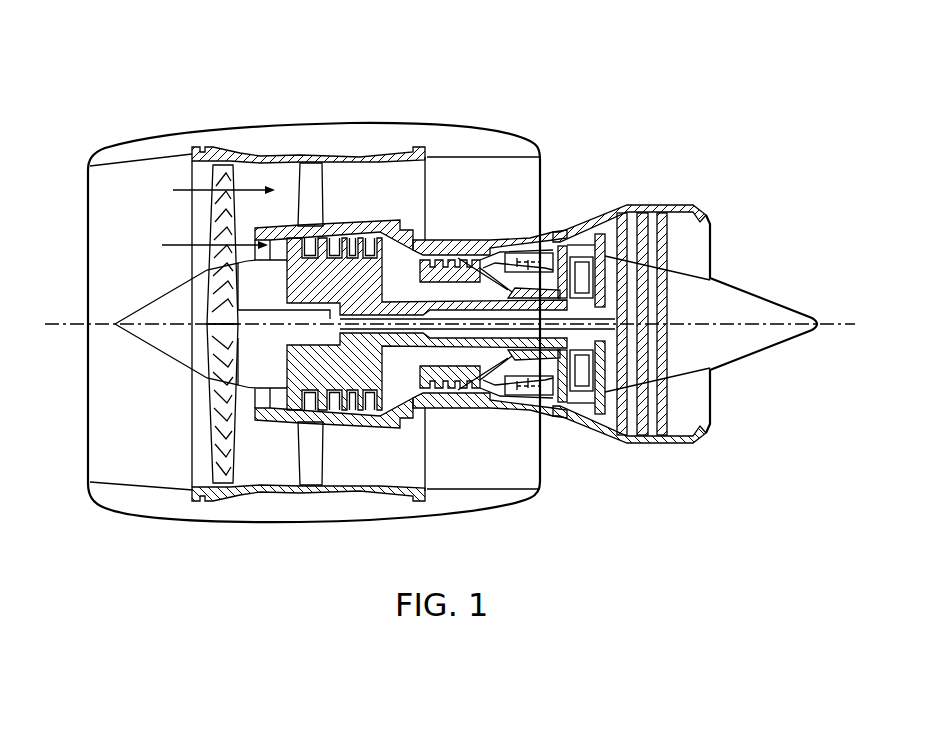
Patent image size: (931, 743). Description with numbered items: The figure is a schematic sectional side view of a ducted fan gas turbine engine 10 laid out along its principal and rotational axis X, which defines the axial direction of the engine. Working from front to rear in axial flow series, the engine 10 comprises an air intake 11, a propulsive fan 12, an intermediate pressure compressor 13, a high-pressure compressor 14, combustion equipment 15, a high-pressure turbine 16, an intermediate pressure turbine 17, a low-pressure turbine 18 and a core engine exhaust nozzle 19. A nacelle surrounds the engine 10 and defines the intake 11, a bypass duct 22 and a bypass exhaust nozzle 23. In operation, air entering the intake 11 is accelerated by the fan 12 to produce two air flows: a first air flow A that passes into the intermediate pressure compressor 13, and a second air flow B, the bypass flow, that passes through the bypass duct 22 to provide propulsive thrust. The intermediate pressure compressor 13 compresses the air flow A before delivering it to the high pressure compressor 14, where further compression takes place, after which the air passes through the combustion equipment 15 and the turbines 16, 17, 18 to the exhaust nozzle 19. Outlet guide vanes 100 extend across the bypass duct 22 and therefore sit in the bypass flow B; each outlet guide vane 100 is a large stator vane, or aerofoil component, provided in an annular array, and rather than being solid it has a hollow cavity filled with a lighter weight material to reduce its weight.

The ducted fan gas turbine engine 10 is at (128, 93).
The air intake 11 is at (138, 160).
The propulsive fan 12 is at (213, 447).
The intermediate pressure compressor 13 is at (352, 405).
The high-pressure compressor 14 is at (462, 250).
The combustion equipment 15 is at (510, 388).
The high-pressure turbine 16 is at (560, 403).
The intermediate pressure turbine 17 is at (600, 233).
The low-pressure turbine 18 is at (613, 425).
The core engine exhaust nozzle 19 is at (703, 210).
The bypass duct 22 is at (500, 192).
The bypass exhaust nozzle 23 is at (539, 152).
The outlet guide vane 100 is at (310, 175).
The first air flow A is at (206, 245).
The second air flow B is at (215, 194).
The principal and rotational axis X is at (450, 307).